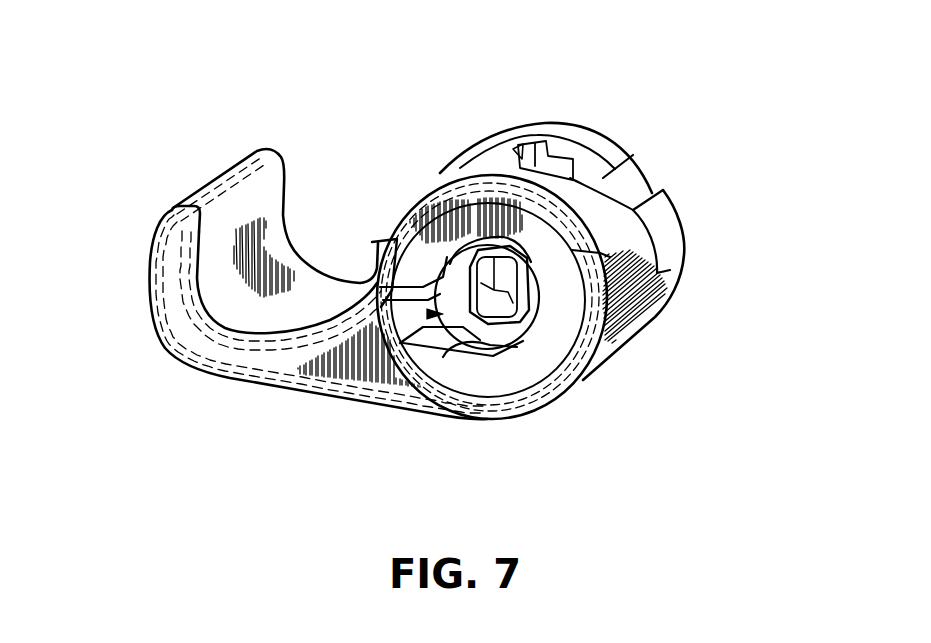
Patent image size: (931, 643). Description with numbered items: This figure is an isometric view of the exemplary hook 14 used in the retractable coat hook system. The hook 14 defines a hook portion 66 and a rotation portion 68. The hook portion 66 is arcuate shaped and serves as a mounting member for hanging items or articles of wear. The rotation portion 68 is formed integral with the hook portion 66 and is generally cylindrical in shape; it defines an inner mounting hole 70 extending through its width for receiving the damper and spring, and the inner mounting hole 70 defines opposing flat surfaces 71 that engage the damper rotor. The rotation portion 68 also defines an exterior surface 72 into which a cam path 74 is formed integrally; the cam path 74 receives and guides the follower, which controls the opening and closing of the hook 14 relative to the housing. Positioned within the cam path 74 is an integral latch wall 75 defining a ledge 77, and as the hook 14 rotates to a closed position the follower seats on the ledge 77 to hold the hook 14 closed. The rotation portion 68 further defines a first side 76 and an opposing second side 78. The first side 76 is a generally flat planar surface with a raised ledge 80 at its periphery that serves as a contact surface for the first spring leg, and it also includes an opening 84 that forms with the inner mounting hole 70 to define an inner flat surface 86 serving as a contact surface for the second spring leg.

The hook 14 is at (305, 400).
The hook portion 66 is at (192, 340).
The rotation portion 68 is at (487, 203).
The inner mounting hole 70 is at (503, 298).
The opposing flat surfaces 71 is at (525, 300).
The exterior surface 72 is at (657, 288).
The cam path 74 is at (627, 182).
The latch wall 75 is at (545, 150).
The first side 76 is at (402, 230).
The ledge 77 is at (520, 152).
The second side 78 is at (683, 238).
The raised ledge 80 is at (601, 264).
The opening 84 is at (388, 352).
The inner flat surface 86 is at (460, 340).